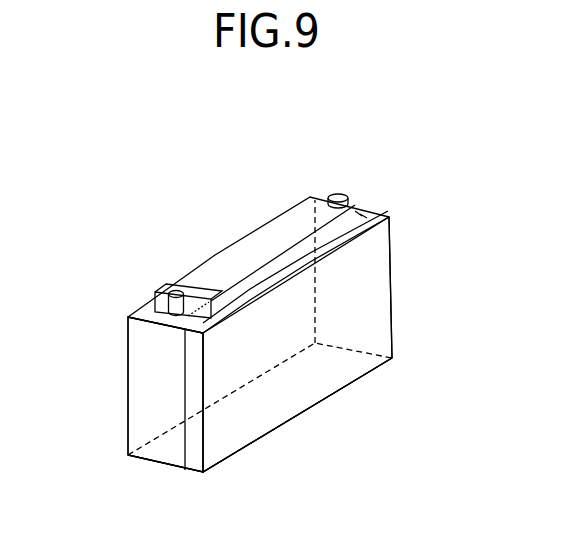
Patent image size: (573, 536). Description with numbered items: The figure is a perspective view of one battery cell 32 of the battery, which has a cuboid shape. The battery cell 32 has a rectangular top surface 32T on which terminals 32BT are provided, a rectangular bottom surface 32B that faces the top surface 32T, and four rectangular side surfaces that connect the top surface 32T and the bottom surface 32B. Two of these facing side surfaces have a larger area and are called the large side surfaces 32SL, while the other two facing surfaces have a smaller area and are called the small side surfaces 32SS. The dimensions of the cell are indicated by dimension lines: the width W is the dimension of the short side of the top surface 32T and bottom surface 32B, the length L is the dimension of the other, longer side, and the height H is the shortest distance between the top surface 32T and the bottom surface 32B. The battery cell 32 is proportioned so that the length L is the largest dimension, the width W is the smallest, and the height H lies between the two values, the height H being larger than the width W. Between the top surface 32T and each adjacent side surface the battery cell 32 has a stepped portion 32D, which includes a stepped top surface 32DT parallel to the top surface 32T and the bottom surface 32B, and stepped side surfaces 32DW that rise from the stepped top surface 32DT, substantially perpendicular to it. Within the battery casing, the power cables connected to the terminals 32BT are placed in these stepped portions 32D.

The battery cell 32 is at (435, 153).
The top surface 32T is at (244, 251).
The stepped portion 32D is at (222, 298).
The terminals 32BT is at (177, 290).
The stepped side surfaces 32DW is at (358, 212).
The stepped top surface 32DT is at (365, 216).
The small side surfaces 32SS is at (356, 293).
The large side surfaces 32SL is at (154, 334).
The bottom surface 32B is at (254, 404).
The height H is at (172, 372).
The width W is at (203, 472).
The length L is at (203, 472).